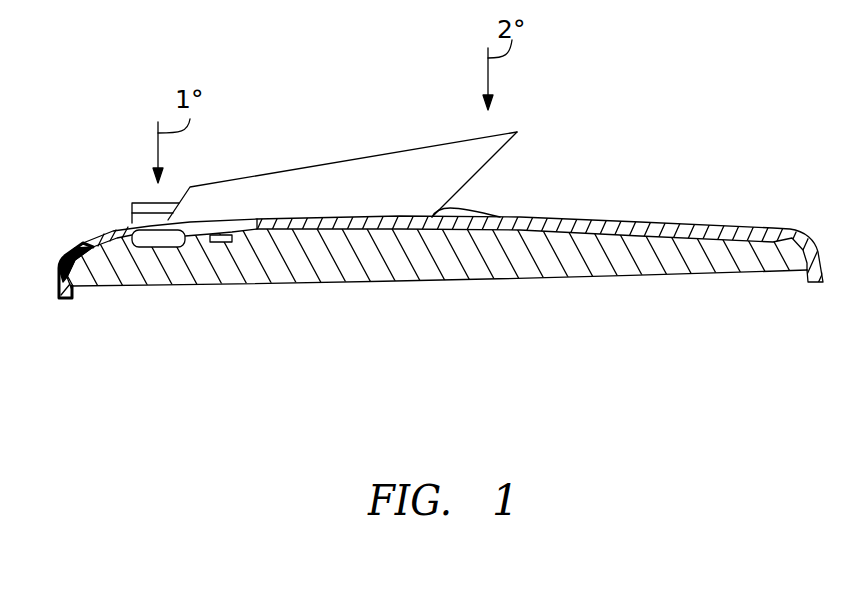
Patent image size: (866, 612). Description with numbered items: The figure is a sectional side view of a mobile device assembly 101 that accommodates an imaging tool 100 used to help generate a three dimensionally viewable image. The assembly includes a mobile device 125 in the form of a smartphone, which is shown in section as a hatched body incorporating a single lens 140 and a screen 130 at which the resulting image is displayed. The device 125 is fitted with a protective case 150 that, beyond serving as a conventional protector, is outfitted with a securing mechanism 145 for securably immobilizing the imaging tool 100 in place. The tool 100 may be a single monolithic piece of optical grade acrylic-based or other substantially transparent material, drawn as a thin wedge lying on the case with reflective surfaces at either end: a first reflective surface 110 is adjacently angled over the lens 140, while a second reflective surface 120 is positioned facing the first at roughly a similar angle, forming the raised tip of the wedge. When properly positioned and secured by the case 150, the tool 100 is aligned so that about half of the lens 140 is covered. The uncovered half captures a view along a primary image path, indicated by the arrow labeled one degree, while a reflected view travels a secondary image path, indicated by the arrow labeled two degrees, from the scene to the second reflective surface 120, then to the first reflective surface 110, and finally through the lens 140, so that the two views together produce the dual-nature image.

The imaging tool 100 is at (425, 201).
The mobile device assembly 101 is at (750, 138).
The first reflective surface 110 is at (191, 188).
The second reflective surface 120 is at (488, 157).
The mobile device 125 is at (578, 265).
The screen 130 is at (378, 288).
The lens 140 is at (172, 243).
The securing mechanism 145 is at (142, 202).
The protective case 150 is at (715, 230).